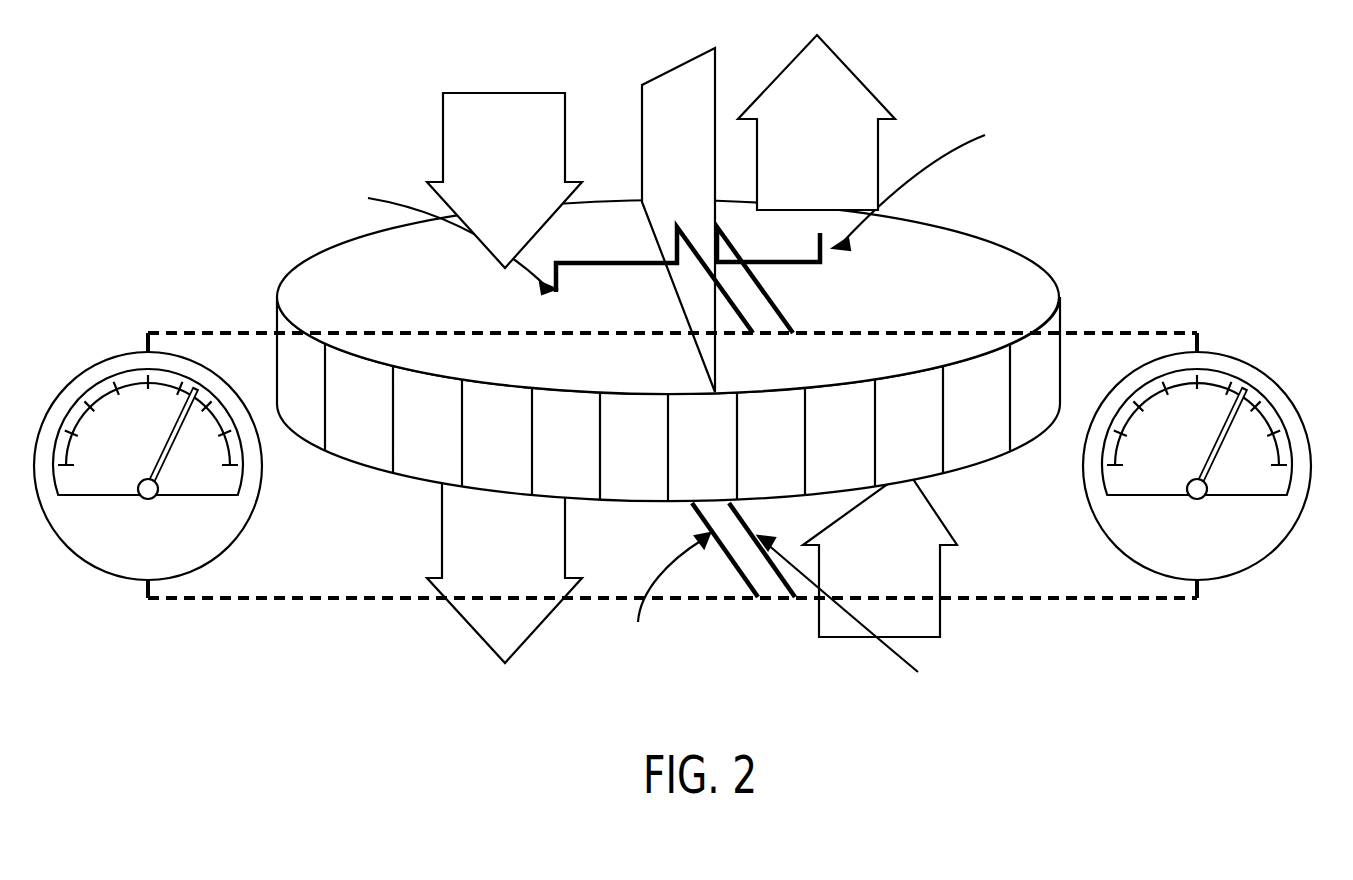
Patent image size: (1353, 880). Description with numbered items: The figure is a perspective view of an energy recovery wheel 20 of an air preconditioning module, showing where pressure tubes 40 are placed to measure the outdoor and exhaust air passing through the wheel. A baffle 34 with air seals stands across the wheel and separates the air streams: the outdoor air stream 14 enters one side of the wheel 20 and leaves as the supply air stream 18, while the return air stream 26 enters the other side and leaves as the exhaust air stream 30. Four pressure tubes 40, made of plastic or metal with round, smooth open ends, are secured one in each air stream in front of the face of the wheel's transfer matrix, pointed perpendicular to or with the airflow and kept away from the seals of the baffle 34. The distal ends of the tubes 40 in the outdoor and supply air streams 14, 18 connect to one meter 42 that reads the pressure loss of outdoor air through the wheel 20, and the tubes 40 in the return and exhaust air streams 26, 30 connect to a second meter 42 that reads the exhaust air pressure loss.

The outdoor air stream 14 is at (542, 105).
The supply air stream 18 is at (478, 623).
The energy recovery wheel 20 is at (1008, 240).
The return air stream 26 is at (928, 605).
The exhaust air stream 30 is at (847, 93).
The baffle 34 is at (718, 58).
The pressure tube 40 is at (618, 268).
The meter 42 is at (75, 557).